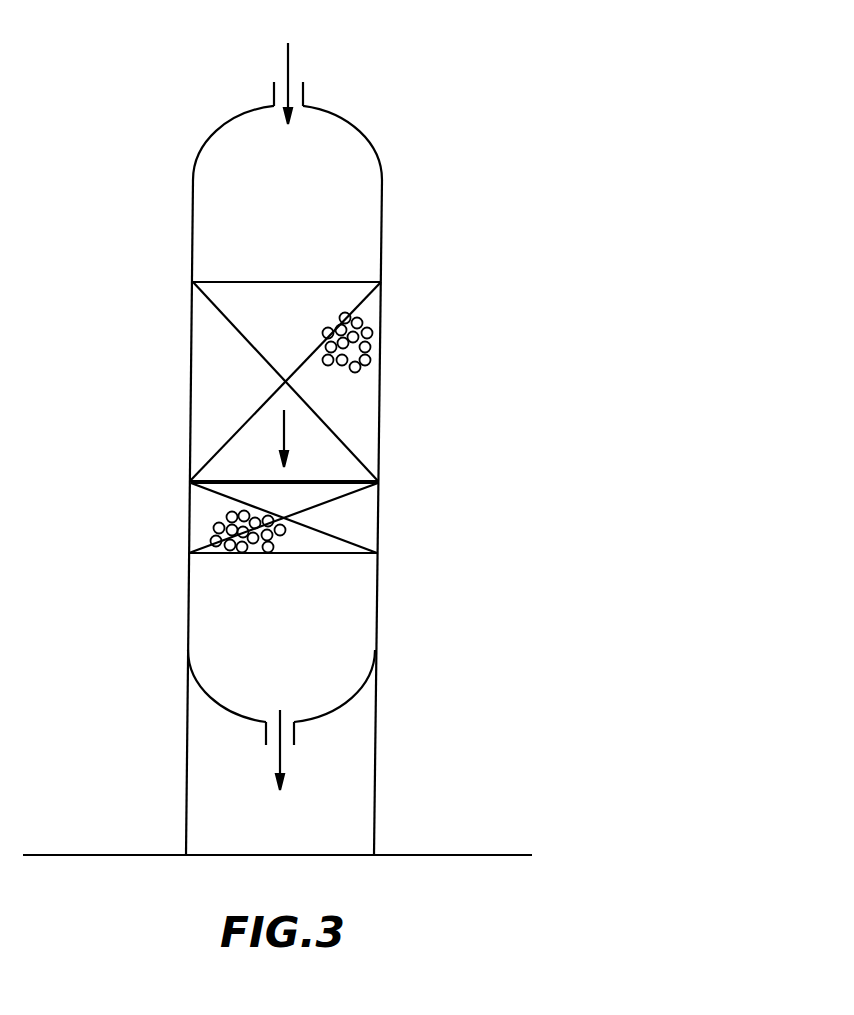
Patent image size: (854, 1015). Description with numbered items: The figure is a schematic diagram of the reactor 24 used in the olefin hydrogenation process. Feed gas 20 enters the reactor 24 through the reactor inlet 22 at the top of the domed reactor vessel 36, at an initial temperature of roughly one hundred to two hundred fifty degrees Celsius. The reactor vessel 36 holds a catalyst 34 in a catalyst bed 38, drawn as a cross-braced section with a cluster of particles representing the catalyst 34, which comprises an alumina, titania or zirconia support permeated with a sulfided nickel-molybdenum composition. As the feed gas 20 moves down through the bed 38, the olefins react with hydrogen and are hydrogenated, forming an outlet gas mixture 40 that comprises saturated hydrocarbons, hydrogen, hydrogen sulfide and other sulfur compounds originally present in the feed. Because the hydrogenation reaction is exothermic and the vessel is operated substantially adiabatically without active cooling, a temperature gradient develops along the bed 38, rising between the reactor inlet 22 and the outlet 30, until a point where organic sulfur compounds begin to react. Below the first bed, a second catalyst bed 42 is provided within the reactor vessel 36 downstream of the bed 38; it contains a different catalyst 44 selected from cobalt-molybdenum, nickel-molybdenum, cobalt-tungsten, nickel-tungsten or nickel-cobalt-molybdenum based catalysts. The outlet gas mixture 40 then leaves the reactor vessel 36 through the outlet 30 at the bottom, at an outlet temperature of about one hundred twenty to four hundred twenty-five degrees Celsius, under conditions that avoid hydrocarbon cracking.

The feed gas 20 is at (290, 67).
The reactor inlet 22 is at (304, 100).
The reactor 24 is at (378, 517).
The outlet 30 is at (295, 728).
The catalyst 34 is at (373, 333).
The reactor vessel 36 is at (382, 222).
The catalyst bed 38 is at (343, 442).
The outlet gas mixture 40 is at (281, 431).
The second catalyst bed 42 is at (210, 515).
The different catalyst 44 is at (211, 541).